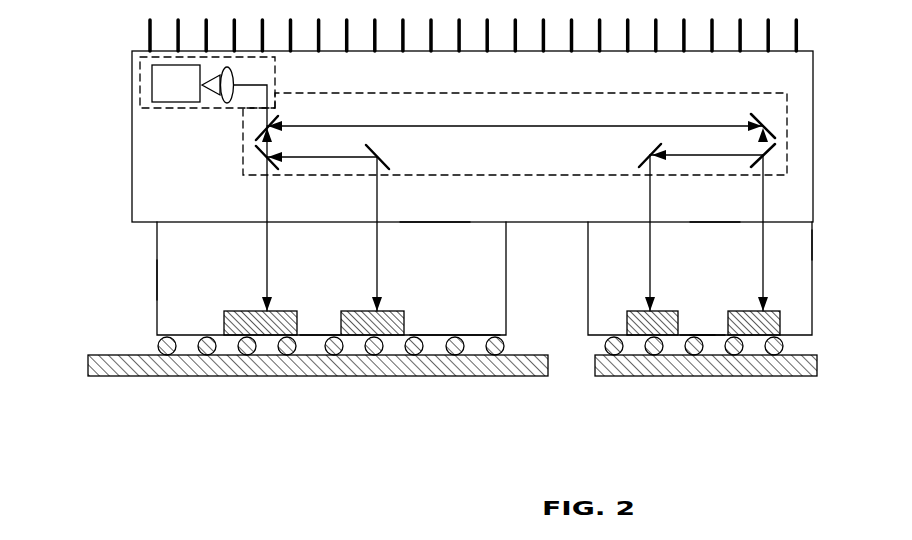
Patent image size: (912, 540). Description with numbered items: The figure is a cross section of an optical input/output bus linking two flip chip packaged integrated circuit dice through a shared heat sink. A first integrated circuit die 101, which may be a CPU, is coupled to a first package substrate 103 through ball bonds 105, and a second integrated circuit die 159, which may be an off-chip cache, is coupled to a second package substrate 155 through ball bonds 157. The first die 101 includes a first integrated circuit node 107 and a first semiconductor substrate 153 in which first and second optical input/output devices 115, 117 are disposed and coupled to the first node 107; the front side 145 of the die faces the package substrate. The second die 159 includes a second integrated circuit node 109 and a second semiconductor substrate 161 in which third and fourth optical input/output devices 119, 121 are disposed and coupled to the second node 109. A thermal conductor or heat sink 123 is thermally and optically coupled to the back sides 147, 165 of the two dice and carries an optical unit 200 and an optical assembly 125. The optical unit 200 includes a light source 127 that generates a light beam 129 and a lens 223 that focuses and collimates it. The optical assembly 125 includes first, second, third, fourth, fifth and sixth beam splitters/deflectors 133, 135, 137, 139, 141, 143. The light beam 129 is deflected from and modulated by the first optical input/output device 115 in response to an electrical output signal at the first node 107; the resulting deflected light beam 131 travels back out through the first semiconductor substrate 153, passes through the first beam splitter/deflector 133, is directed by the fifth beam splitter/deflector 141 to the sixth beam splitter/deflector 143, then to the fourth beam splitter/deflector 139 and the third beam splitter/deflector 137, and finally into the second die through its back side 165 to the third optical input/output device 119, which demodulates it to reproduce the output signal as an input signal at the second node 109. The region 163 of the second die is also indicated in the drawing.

The optical unit 200 is at (140, 62).
The light source 127 is at (165, 85).
The lens 223 is at (212, 95).
The light beam 129 is at (275, 83).
The heat sink 123 is at (813, 62).
The optical assembly 125 is at (778, 110).
The deflected light beam 131 is at (438, 122).
The fifth beam splitter/deflector 141 is at (283, 112).
The first beam splitter/deflector 133 is at (283, 163).
The second beam splitter/deflector 135 is at (388, 162).
The third beam splitter/deflector 137 is at (643, 158).
The fourth beam splitter/deflector 139 is at (757, 148).
The sixth beam splitter/deflector 143 is at (745, 118).
The first integrated circuit die 101 is at (162, 258).
The first semiconductor substrate 153 is at (193, 285).
The back side 147 is at (430, 223).
The first integrated circuit node 107 is at (332, 333).
The front side 145 is at (433, 333).
The first optical input/output device 115 is at (225, 315).
The second optical input/output device 117 is at (405, 307).
The ball bonds 105 is at (160, 345).
The first package substrate 103 is at (88, 368).
The second integrated circuit die 159 is at (813, 257).
The second semiconductor substrate 161 is at (803, 242).
The back side 165 is at (725, 223).
The package bottom 163 is at (723, 312).
The second integrated circuit node 109 is at (707, 330).
The third optical input/output device 119 is at (627, 317).
The fourth optical input/output device 121 is at (778, 310).
The ball bonds 157 is at (787, 343).
The second package substrate 155 is at (818, 362).